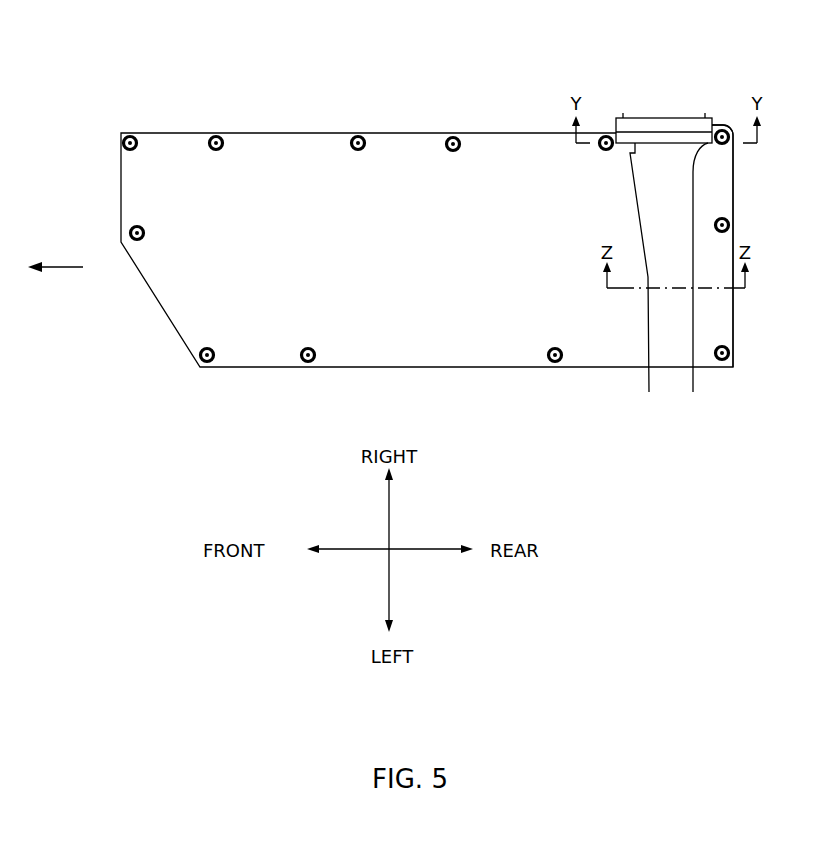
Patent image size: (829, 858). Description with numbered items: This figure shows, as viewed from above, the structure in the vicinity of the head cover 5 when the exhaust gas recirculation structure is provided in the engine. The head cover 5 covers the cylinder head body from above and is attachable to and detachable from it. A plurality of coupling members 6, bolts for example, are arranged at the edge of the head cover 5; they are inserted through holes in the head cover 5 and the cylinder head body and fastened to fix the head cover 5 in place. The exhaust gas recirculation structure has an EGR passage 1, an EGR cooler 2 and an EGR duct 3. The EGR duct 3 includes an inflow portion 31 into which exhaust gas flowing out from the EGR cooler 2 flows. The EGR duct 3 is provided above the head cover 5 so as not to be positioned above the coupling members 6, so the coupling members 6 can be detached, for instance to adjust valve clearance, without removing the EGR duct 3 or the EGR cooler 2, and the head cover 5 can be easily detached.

The EGR passage 1 is at (703, 164).
The EGR cooler 2 is at (645, 118).
The EGR duct 3 is at (675, 188).
The head cover 5 is at (527, 152).
The coupling member 6 is at (128, 134).
The inflow portion 31 is at (684, 131).